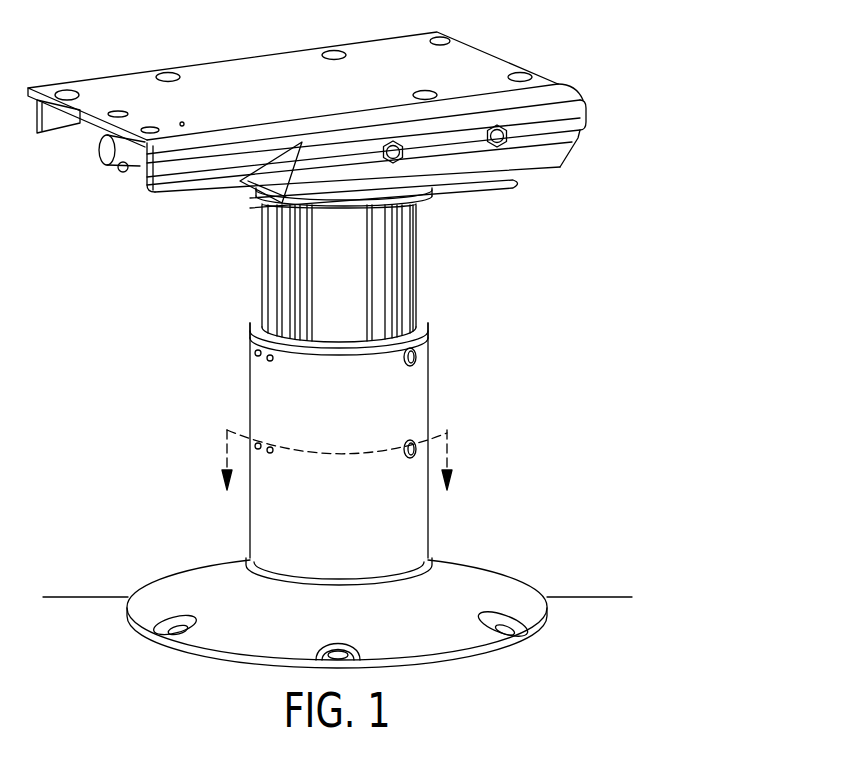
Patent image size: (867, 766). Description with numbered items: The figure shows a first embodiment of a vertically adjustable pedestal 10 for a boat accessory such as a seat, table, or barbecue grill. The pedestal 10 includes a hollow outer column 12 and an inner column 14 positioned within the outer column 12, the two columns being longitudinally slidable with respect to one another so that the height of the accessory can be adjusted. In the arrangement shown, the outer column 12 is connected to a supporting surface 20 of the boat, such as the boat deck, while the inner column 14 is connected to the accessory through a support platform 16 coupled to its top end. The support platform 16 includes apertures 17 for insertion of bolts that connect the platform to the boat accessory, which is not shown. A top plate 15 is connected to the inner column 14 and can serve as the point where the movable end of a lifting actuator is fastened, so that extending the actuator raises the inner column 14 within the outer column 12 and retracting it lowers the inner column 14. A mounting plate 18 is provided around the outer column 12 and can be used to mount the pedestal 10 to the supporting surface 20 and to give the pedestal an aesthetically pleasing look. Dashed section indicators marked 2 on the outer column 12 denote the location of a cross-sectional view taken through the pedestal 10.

The vertically adjustable pedestal 10 is at (591, 309).
The hollow outer column 12 is at (430, 385).
The inner column 14 is at (261, 274).
The top plate 15 is at (423, 205).
The support platform 16 is at (383, 70).
The apertures 17 is at (67, 91).
The mounting plate 18 is at (522, 607).
The supporting surface 20 is at (78, 594).
The section line of FIG. 2 is at (338, 481).